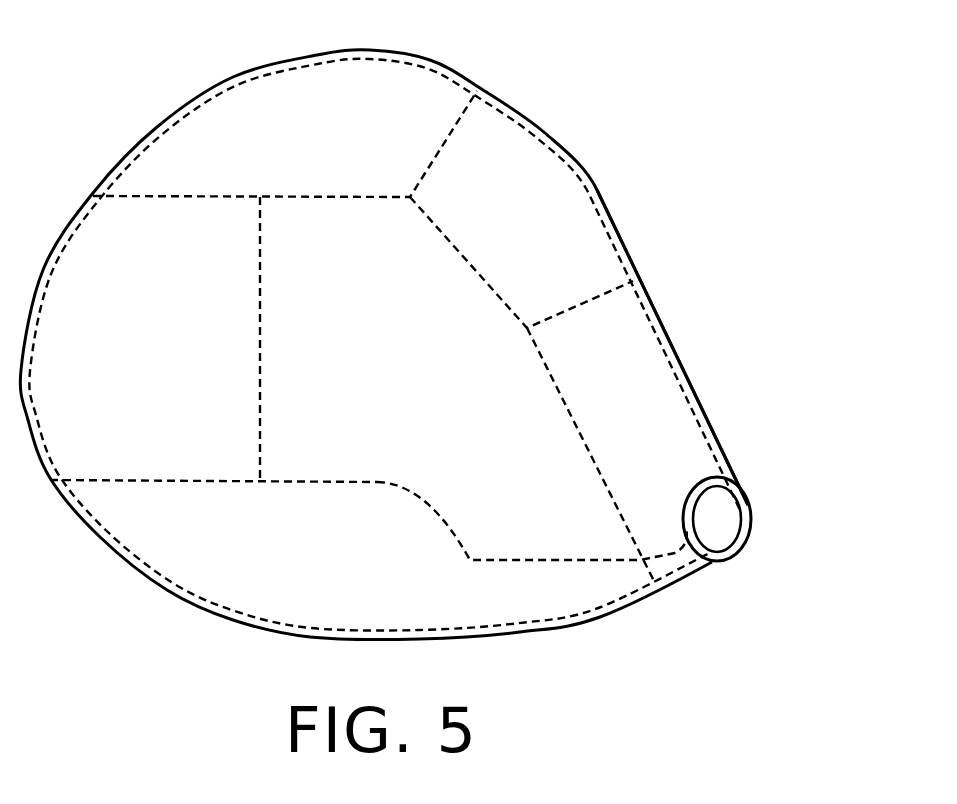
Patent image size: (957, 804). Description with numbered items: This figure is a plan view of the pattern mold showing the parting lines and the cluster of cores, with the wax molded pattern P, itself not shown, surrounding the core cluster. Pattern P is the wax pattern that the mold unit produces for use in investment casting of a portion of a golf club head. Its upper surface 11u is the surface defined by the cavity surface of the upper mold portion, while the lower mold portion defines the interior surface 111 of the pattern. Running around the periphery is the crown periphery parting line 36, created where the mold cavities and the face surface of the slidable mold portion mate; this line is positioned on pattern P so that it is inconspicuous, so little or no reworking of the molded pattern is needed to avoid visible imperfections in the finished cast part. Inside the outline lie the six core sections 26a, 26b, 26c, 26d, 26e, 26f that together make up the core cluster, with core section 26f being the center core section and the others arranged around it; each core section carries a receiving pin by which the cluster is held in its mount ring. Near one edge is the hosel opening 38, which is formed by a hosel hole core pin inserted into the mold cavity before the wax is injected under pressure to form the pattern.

The upper surface 11u is at (163, 153).
The crown periphery parting line 36 is at (404, 70).
The hosel opening 38 is at (730, 513).
The wax molded pattern P is at (611, 196).
The face plate edge 111 is at (643, 288).
The core section 26a is at (325, 577).
The core section 26b is at (175, 347).
The core section 26c is at (345, 150).
The core section 26d is at (547, 231).
The core section 26e is at (645, 425).
The center core section 26f is at (417, 383).